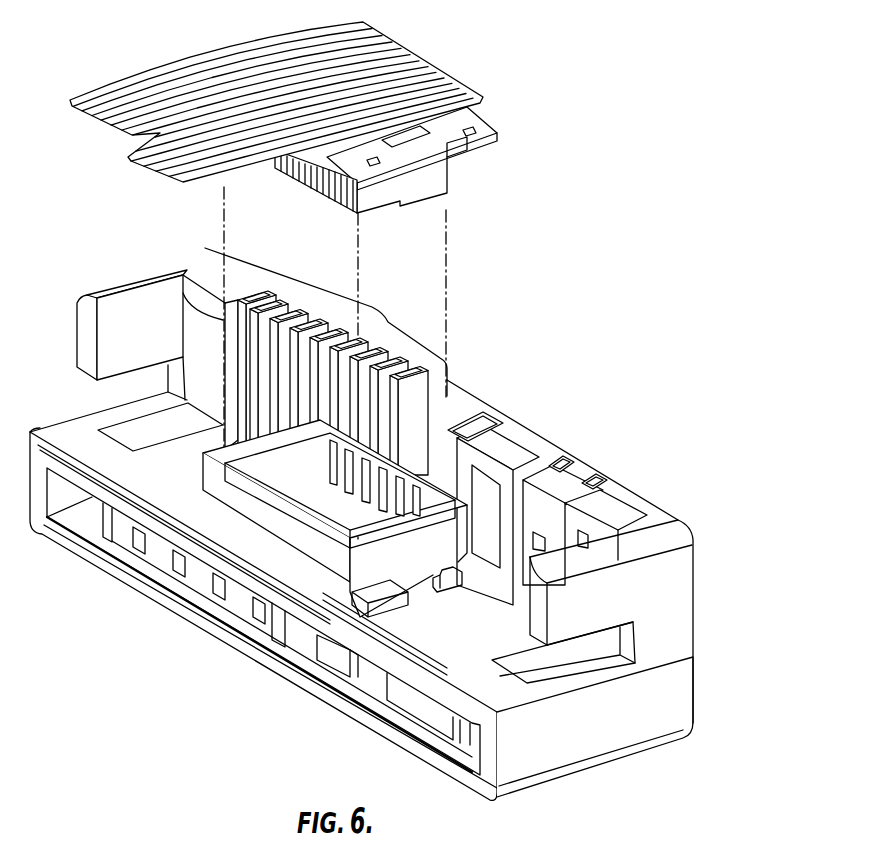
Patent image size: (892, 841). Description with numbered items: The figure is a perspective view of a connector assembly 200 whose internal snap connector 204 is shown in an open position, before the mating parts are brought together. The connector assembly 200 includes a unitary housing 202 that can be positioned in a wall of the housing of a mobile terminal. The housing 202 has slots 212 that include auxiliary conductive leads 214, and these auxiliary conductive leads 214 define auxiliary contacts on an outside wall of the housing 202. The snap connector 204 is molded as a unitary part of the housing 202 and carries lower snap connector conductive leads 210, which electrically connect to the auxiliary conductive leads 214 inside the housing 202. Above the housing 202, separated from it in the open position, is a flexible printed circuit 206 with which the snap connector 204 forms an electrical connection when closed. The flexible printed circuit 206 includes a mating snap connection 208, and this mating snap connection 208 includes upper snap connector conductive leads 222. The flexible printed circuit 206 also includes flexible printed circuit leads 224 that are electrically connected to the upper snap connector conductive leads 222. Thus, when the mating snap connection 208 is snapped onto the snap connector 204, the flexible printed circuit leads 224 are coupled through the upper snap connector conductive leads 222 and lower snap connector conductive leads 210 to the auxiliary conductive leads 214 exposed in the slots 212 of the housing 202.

The connector assembly 200 is at (606, 388).
The housing 202 is at (677, 605).
The snap connector 204 is at (325, 580).
The flexible printed circuit 206 is at (143, 115).
The mating snap connection 208 is at (500, 140).
The lower snap connector conductive leads 210 is at (333, 483).
The slots 212 is at (391, 316).
The auxiliary conductive leads 214 is at (322, 327).
The upper snap connector conductive leads 222 is at (478, 108).
The flexible printed circuit leads 224 is at (233, 92).